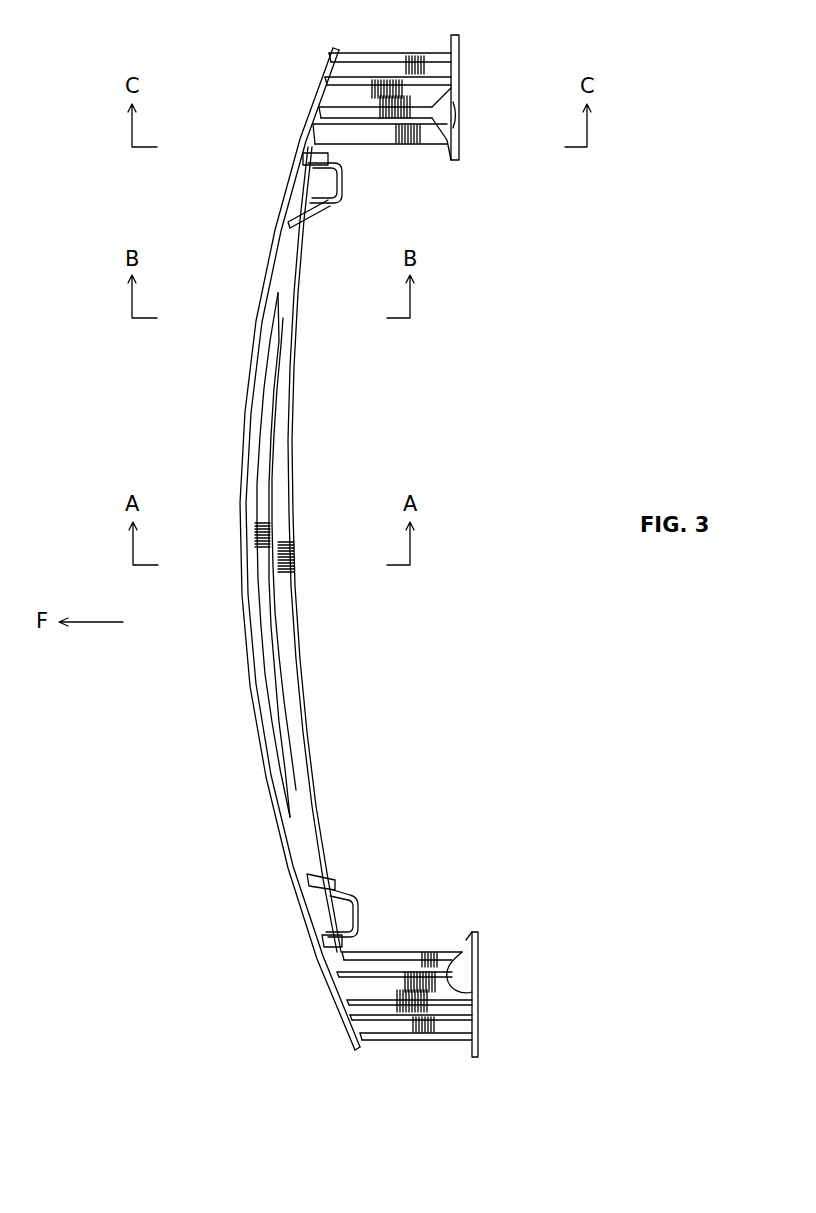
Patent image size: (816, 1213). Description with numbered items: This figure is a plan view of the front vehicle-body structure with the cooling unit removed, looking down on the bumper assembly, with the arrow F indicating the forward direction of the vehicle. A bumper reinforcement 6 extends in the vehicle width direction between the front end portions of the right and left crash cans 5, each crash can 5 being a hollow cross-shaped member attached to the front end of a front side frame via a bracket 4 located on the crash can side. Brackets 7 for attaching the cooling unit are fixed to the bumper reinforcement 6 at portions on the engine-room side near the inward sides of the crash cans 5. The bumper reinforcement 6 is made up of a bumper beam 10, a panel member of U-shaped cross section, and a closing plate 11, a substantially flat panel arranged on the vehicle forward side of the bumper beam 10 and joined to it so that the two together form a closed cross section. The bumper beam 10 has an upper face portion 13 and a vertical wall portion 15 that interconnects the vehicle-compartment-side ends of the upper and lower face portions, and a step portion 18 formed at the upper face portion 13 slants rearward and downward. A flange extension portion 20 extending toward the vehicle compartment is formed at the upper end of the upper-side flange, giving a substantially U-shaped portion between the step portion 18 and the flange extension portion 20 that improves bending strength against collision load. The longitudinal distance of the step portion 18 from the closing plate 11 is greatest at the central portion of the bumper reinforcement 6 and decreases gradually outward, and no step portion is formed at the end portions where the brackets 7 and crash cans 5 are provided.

The bracket 4 is at (459, 63).
The crash can 5 is at (386, 52).
The bumper reinforcement 6 is at (236, 751).
The bracket for attaching a cooling unit 7 is at (342, 178).
The bumper beam 10 is at (311, 369).
The closing plate 11 is at (252, 357).
The upper face portion 13 is at (285, 410).
The vertical wall portion 15 is at (296, 467).
The step portion 18 is at (282, 628).
The flange extension portion 20 is at (260, 678).